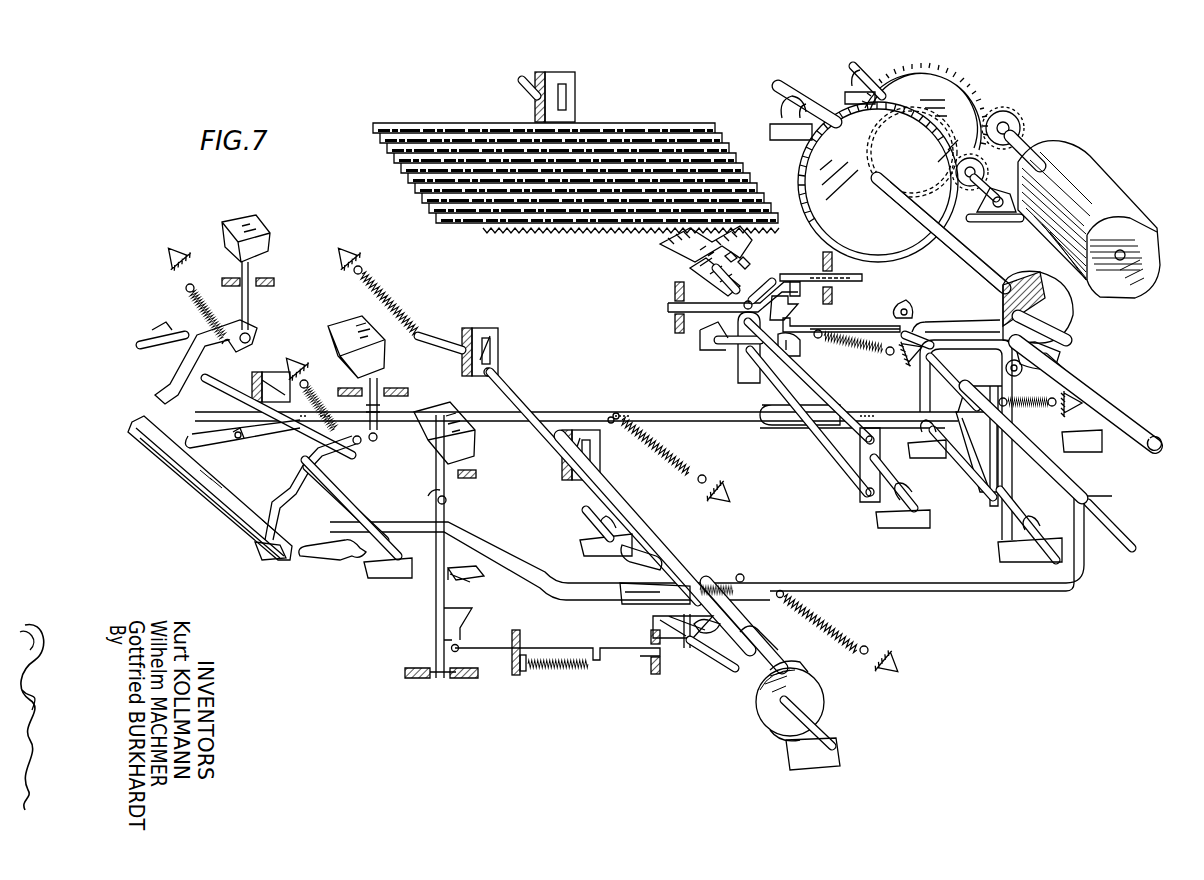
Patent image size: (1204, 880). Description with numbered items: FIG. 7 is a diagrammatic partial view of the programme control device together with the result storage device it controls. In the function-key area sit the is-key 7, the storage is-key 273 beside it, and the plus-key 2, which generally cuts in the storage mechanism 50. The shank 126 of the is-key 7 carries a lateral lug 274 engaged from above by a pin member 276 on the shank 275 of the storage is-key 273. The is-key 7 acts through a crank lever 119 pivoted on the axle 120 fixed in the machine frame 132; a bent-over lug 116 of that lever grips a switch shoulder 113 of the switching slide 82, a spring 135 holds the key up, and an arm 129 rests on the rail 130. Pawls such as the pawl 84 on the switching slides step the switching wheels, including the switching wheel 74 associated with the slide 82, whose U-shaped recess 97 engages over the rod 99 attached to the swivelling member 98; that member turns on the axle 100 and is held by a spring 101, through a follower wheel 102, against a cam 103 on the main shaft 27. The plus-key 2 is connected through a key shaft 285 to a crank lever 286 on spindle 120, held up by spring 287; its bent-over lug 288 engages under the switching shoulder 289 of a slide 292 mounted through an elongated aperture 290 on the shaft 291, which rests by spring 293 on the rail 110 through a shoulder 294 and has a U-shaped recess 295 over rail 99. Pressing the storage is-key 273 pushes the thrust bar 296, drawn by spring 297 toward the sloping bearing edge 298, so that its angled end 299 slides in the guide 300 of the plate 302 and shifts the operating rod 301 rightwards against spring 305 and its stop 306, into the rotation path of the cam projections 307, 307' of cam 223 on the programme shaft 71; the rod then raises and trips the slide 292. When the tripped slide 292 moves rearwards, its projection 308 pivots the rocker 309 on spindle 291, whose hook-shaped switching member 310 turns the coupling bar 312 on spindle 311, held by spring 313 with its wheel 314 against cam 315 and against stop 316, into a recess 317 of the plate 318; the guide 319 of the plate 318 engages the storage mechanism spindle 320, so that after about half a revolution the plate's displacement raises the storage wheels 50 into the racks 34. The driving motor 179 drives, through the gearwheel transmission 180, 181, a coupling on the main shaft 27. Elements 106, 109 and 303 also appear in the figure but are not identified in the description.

The plus-key 2 is at (262, 248).
The is-key 7 is at (354, 320).
The main shaft 27 is at (1134, 418).
The racks 34 is at (400, 180).
The storage mechanism wheels 50 is at (660, 244).
The programme shaft 71 is at (824, 736).
The switching wheel 74 is at (652, 548).
The switching slide 82 is at (976, 592).
The pawl 84 is at (630, 596).
The U-shaped recess 97 is at (1100, 512).
The swivelling member 98 is at (932, 386).
The rod 99 is at (1050, 470).
The axle 100 is at (1044, 548).
The spring 101 is at (1062, 394).
The follower wheel 102 is at (1016, 374).
The cam 103 is at (1062, 350).
The spring 106 is at (838, 614).
The bearing 109 is at (398, 580).
The rail 110 is at (468, 582).
The switch shoulder 113 is at (322, 560).
The bent-over lug 116 is at (336, 514).
The crank lever 119 is at (300, 478).
The axle 120 is at (152, 330).
The shank 126 is at (380, 390).
The arm 129 is at (256, 546).
The rail 130 is at (178, 458).
The machine frame 132 is at (578, 100).
The spring 135 is at (306, 392).
The driving motor 179 is at (1092, 180).
The gearwheel transmission 180 is at (992, 112).
The gearwheel transmission 181 is at (948, 176).
The cam 223 is at (812, 698).
The storage is-key 273 is at (458, 452).
The lateral lug 274 is at (383, 445).
The shank 275 is at (458, 482).
The pin member 276 is at (452, 502).
The key shaft 285 is at (250, 312).
The crank lever 286 is at (190, 376).
The spring 287 is at (192, 300).
The bent-over lug 288 is at (240, 450).
The switching shoulder 289 is at (152, 440).
The elongated aperture 290 is at (764, 410).
The shaft 291 is at (900, 498).
The slide 292 is at (627, 412).
The spring 293 is at (684, 460).
The shoulder 294 is at (282, 440).
The U-shaped recess 295 is at (1010, 406).
The thrust bar 296 is at (490, 660).
The spring 297 is at (550, 670).
The sloping bearing edge 298 is at (472, 636).
The angled end 299 is at (656, 632).
The guide 300 is at (706, 648).
The operating rod 301 is at (626, 522).
The plate 302 is at (742, 624).
The slot 303 is at (572, 446).
The spring 305 is at (384, 292).
The stop 306 is at (494, 372).
The cam projection 307 is at (755, 738).
The cam projection 307' is at (813, 658).
The projection 308 is at (800, 436).
The rocker 309 is at (858, 468).
The hook-shaped switching member 310 is at (806, 350).
The spindle 311 is at (904, 304).
The coupling bar 312 is at (845, 326).
The spring 313 is at (888, 356).
The wheel 314 is at (958, 308).
The cam 315 is at (1066, 318).
The stop 316 is at (852, 348).
The recess 317 is at (780, 296).
The plate 318 is at (672, 306).
The guide 319 is at (754, 290).
The storage mechanism spindle 320 is at (690, 282).